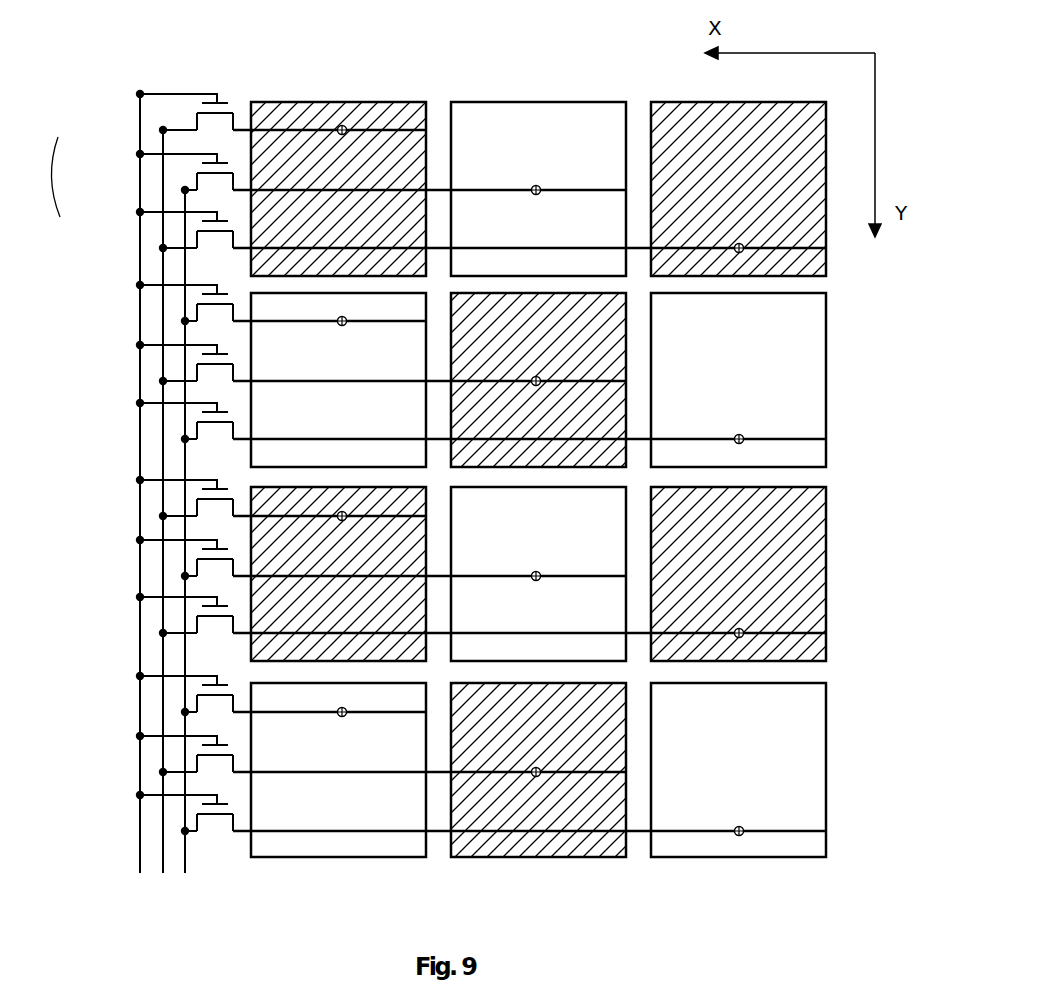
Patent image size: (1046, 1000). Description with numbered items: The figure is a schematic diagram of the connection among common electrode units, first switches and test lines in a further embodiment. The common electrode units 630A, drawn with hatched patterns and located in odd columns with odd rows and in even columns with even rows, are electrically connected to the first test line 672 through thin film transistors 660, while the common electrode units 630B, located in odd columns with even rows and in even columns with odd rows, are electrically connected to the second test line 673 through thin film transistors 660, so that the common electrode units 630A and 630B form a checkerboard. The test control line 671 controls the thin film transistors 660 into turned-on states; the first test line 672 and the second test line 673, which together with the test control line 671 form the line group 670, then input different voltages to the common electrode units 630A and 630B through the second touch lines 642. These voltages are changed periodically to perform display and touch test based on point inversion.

The common electrode unit 630A is at (263, 113).
The common electrode unit 630B is at (493, 112).
The second touch line 642 is at (593, 187).
The thin film transistor 660 is at (207, 101).
The wiring group 670 is at (32, 177).
The test control line 671 is at (137, 100).
The first test line 672 is at (163, 162).
The second test line 673 is at (185, 242).